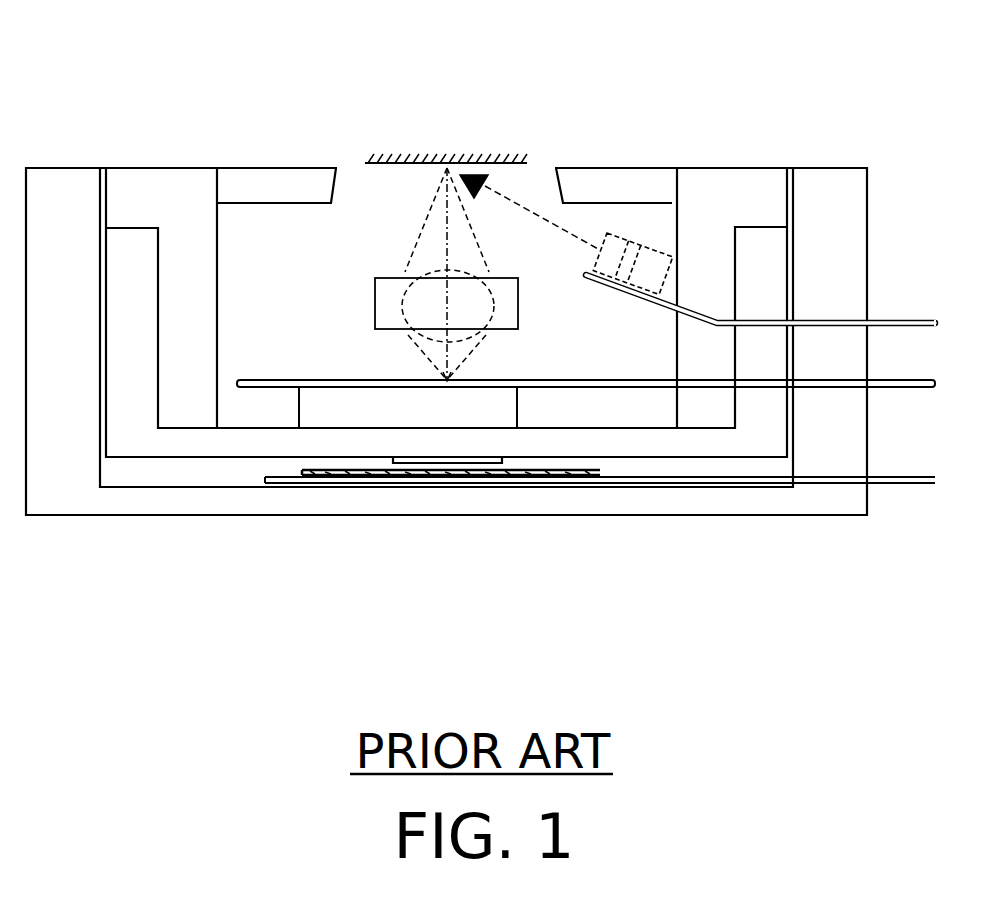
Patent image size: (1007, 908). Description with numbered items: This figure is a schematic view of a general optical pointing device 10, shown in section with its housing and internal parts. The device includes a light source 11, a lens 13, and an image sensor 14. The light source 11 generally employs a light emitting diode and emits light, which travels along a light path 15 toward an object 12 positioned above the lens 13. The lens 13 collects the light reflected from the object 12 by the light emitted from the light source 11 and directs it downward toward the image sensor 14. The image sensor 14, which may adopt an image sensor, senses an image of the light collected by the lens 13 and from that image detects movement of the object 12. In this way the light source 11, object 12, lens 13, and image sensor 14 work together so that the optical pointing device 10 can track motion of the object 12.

The housing frame 10 is at (218, 503).
The light source 11 is at (660, 258).
The object 12 is at (393, 160).
The lens 13 is at (392, 277).
The image sensor 14 is at (367, 440).
The light beam 15 is at (532, 213).